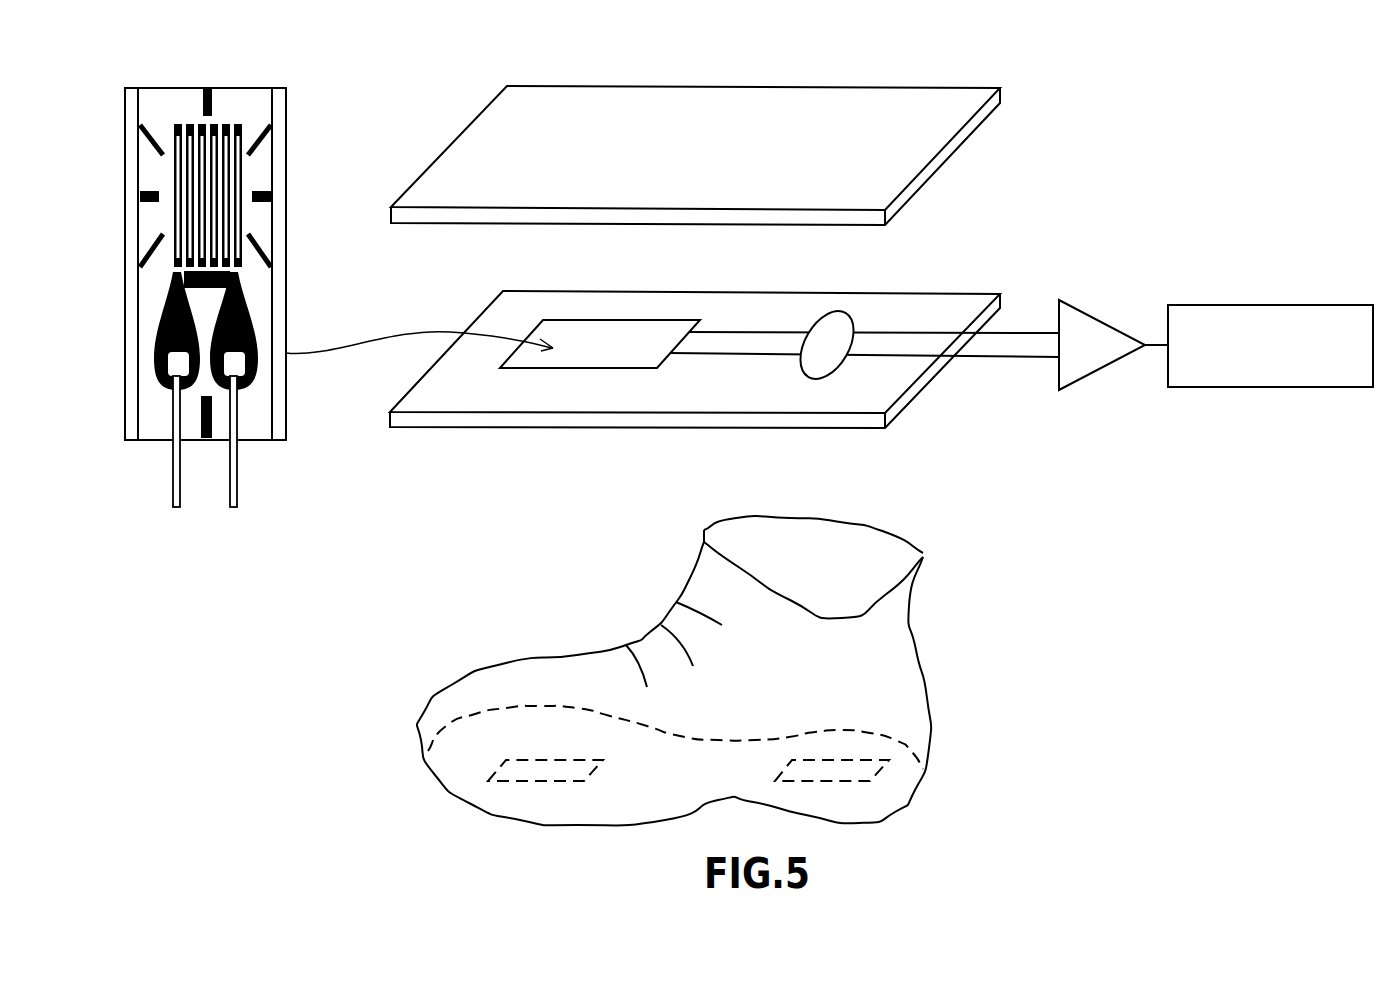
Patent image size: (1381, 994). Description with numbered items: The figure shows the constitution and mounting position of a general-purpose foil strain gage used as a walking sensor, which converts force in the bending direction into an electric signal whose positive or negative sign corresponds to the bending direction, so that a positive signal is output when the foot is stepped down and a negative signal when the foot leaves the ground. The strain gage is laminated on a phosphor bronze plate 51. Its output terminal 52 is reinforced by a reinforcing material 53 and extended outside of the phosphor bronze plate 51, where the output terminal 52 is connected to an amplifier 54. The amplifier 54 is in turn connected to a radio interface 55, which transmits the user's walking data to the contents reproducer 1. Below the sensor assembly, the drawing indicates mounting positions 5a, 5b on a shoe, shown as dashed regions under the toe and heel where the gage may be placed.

The contents reproducer 1 is at (1097, 83).
The phosphor bronze plate 51 is at (590, 430).
The output terminal 52 is at (1000, 358).
The reinforcing material 53 is at (807, 380).
The amplifier 54 is at (1100, 320).
The radio interface 55 is at (1317, 303).
The toe sensor position 5a is at (506, 781).
The heel sensor position 5b is at (873, 779).